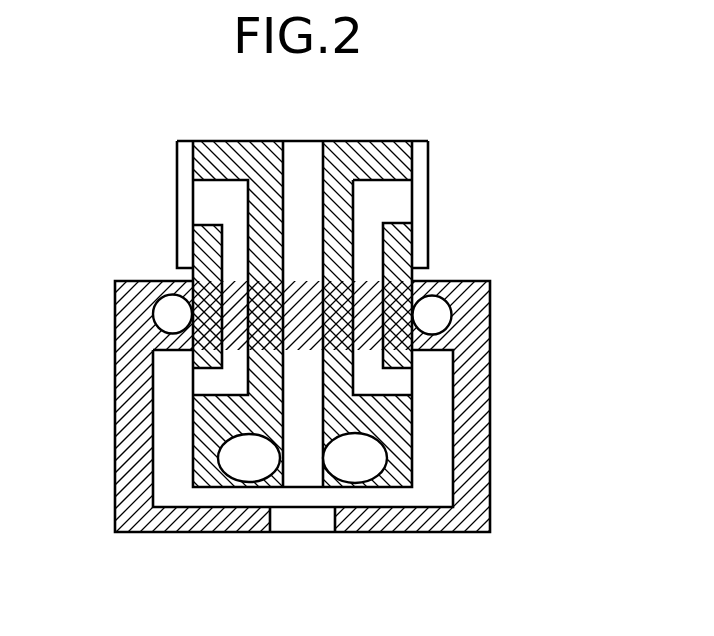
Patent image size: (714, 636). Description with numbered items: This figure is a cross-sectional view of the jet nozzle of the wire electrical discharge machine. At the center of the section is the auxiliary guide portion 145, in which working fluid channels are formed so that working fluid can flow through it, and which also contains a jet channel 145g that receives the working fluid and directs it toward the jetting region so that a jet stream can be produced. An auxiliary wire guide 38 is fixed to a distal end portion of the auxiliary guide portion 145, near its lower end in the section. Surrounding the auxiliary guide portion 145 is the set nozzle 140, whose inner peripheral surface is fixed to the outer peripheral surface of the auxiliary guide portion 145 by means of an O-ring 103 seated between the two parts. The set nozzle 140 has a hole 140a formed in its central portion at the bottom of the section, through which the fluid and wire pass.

The auxiliary guide portion 145 is at (357, 316).
The jet channel 145g is at (232, 212).
The O-ring 103 is at (172, 312).
The set nozzle 140 is at (115, 469).
The hole 140a is at (311, 519).
The auxiliary wire guide 38 is at (250, 458).